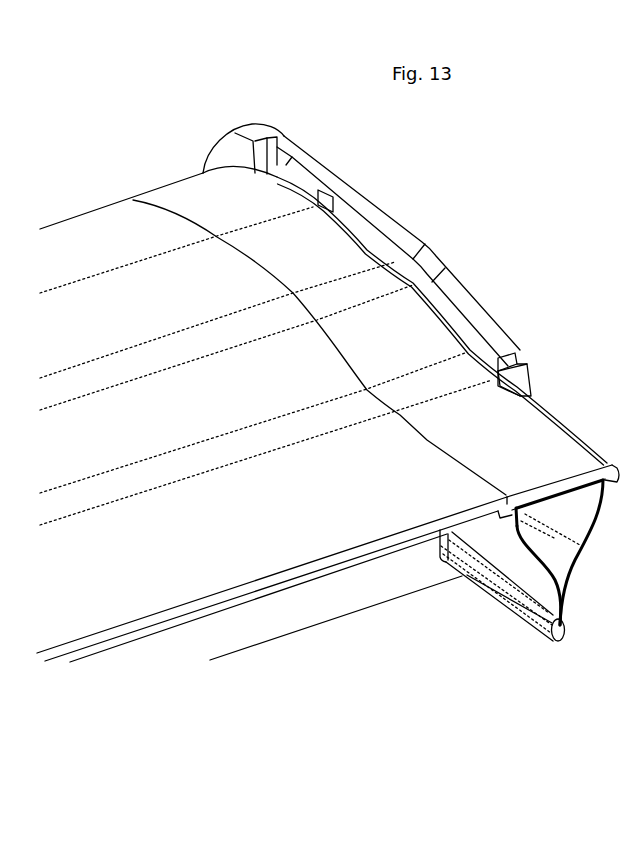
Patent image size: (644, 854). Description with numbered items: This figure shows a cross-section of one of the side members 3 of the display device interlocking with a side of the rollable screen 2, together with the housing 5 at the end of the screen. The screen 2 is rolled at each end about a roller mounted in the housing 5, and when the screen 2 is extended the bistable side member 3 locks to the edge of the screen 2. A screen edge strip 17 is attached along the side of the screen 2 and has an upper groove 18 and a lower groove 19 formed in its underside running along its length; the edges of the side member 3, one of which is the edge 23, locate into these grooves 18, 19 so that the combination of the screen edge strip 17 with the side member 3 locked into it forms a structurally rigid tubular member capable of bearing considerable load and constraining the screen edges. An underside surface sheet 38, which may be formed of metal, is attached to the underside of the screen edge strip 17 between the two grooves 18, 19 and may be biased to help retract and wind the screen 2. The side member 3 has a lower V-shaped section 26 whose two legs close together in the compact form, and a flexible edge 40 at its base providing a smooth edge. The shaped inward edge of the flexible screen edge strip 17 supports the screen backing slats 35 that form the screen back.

The rollable screen 2 is at (269, 530).
The side member 3 is at (437, 300).
The housing 5 is at (232, 147).
The screen edge strip 17 is at (543, 494).
The upper groove 18 is at (607, 466).
The lower groove 19 is at (510, 516).
The edge 23 is at (515, 510).
The lower V-shaped section 26 is at (567, 595).
The screen backing slats 35 is at (325, 577).
The underside surface sheet 38 is at (560, 500).
The flexible edge 40 is at (553, 641).